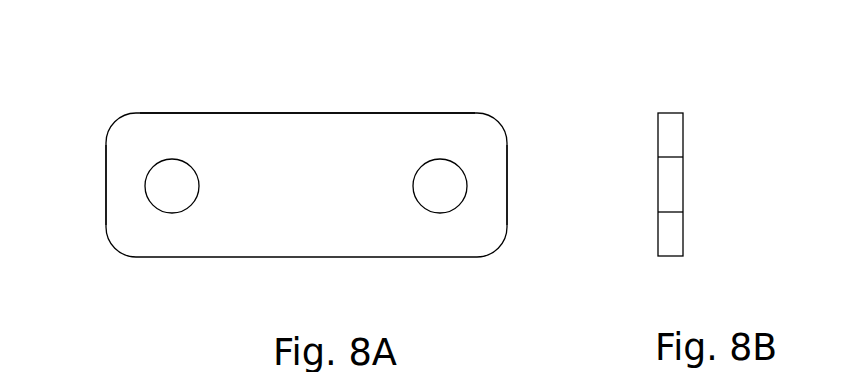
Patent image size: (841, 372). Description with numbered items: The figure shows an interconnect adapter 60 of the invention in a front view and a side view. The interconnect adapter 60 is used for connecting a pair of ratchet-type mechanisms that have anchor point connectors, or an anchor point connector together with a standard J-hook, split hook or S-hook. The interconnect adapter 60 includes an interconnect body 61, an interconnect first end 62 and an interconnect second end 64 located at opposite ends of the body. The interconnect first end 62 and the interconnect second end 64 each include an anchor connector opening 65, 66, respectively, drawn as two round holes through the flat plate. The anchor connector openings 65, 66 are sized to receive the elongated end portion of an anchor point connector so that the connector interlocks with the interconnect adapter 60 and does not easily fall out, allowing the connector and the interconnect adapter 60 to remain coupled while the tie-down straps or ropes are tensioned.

In FIG. 8A, the interconnect adapter 60 is at (268, 114).
In FIG. 8A, the interconnect body 61 is at (332, 113).
In FIG. 8A, the interconnect first end 62 is at (106, 181).
In FIG. 8A, the interconnect second end 64 is at (508, 183).
In FIG. 8B, the interconnect second end 64 is at (682, 135).
In FIG. 8A, the anchor connector opening 65 is at (199, 187).
In FIG. 8A, the anchor connector opening 66 is at (413, 184).
In FIG. 8B, the anchor connector opening 66 is at (682, 193).